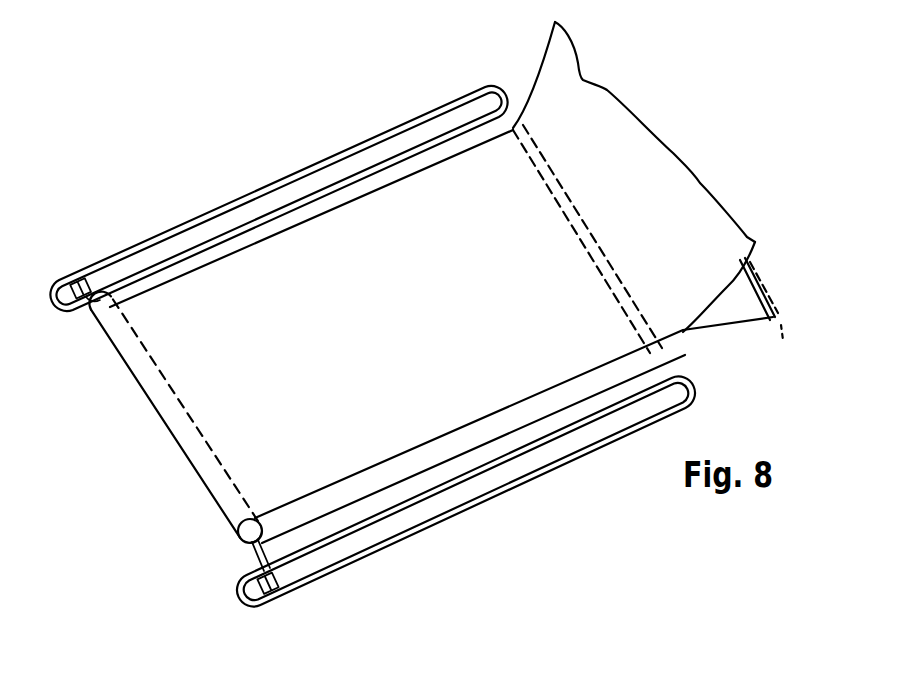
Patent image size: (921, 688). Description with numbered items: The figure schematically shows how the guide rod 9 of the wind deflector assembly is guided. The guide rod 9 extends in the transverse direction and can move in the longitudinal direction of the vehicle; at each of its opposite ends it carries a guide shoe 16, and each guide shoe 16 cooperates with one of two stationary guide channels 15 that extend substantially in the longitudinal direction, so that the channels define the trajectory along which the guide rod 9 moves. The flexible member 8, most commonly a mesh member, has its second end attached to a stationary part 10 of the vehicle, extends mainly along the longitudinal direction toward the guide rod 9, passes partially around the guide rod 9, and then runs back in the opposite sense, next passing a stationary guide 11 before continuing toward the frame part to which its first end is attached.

The flexible member 8 is at (686, 196).
The guide rod 9 is at (160, 418).
The stationary part 10 is at (782, 330).
The stationary guide 11 is at (558, 173).
The stationary guide channel 15 is at (203, 216).
The guide shoe 16 is at (78, 275).